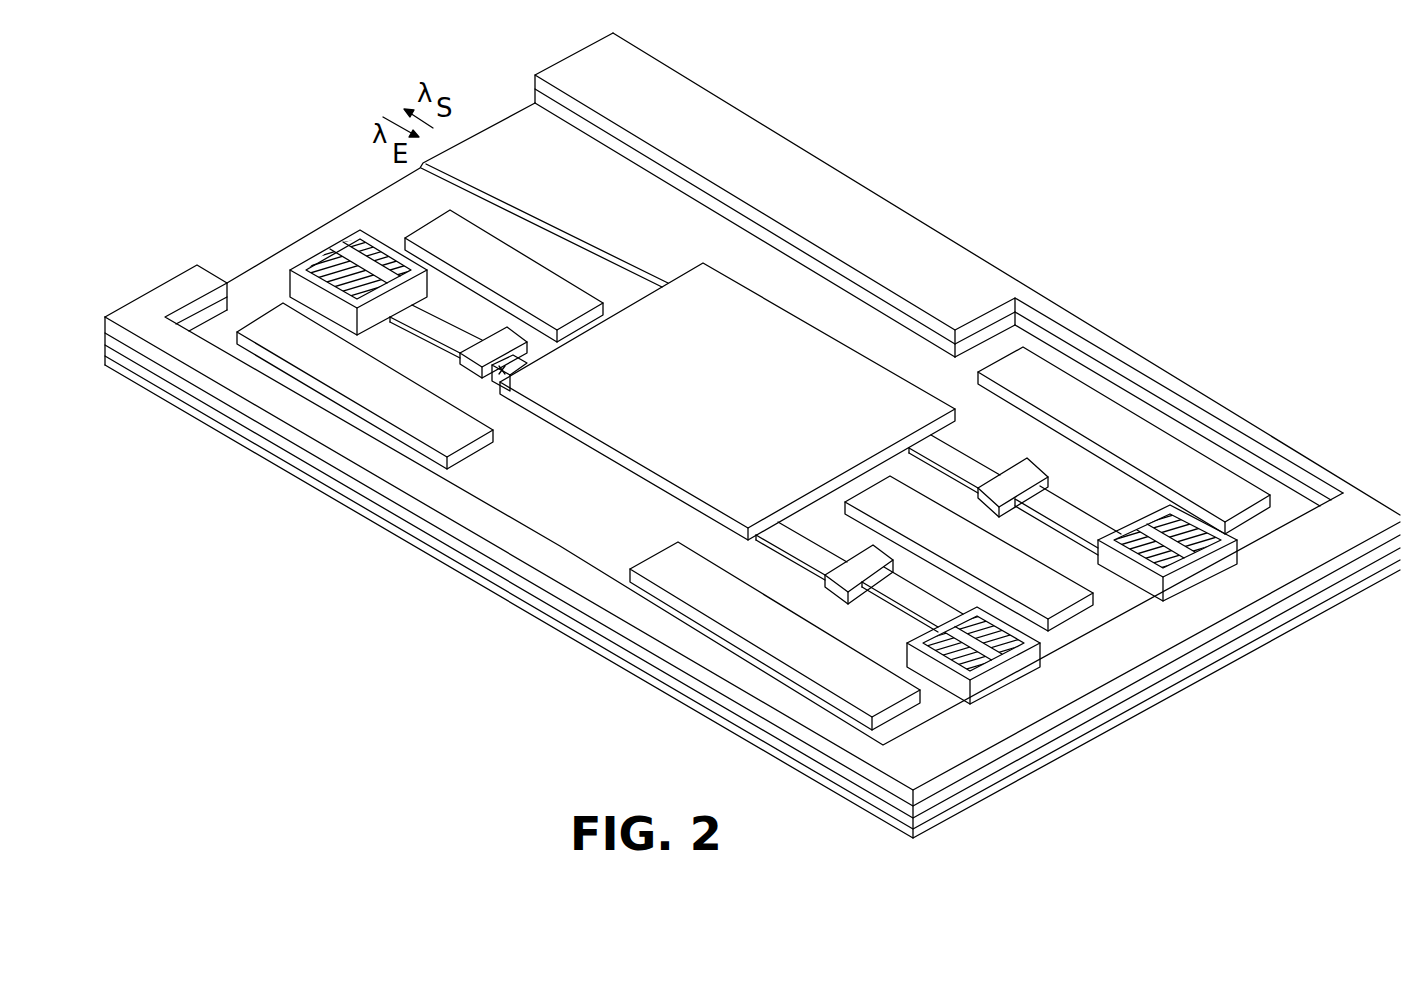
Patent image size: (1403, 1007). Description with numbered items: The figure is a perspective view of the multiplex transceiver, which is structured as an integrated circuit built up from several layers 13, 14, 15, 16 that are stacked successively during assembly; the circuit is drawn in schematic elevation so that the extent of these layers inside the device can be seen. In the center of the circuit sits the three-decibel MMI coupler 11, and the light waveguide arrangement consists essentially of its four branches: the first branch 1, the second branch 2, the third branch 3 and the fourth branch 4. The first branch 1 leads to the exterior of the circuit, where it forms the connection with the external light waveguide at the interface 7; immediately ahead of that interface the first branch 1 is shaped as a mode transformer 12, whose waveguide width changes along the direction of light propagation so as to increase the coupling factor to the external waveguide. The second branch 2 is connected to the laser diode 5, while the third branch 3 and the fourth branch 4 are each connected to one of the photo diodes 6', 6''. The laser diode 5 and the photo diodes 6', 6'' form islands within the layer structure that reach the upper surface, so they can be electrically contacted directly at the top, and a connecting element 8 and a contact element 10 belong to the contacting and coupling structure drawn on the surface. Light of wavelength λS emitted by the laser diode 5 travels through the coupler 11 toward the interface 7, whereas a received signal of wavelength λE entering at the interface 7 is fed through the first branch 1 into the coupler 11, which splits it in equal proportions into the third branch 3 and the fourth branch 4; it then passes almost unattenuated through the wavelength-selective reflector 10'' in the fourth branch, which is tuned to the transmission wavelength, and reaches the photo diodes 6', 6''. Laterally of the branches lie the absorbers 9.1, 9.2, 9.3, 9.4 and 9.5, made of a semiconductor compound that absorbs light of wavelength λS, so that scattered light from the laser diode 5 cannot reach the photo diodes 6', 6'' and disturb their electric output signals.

The first branch 1 is at (653, 275).
The second branch 2 is at (502, 370).
The third branch 3 is at (957, 450).
The fourth branch 4 is at (783, 530).
The laser diode 5 is at (340, 258).
The photo diode 6' is at (1241, 509).
The photo diode 6'' is at (1053, 710).
The interface 7 is at (462, 133).
The connecting element 8 is at (476, 356).
The absorber 9.1 is at (438, 238).
The absorber 9.2 is at (278, 335).
The absorber 9.3 is at (1187, 523).
The absorber 9.4 is at (977, 655).
The absorber 9.5 is at (1062, 397).
The contact element 10 is at (1093, 435).
The wavelength-selective reflector 10'' is at (860, 677).
The 3 dB MMI coupler 11 is at (813, 360).
The mode transformer 12 is at (493, 176).
The layer 13 is at (1225, 620).
The layer 14 is at (1183, 660).
The layer 15 is at (1147, 690).
The layer 16 is at (1123, 722).